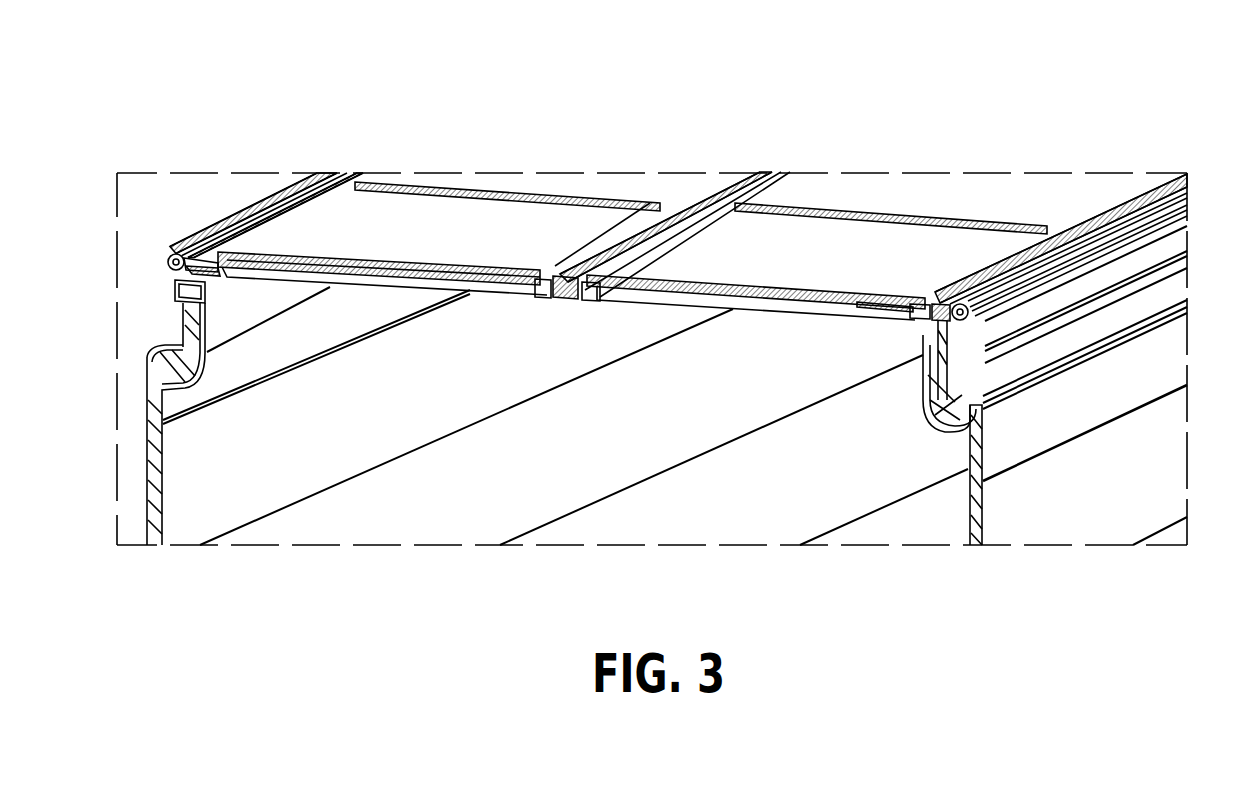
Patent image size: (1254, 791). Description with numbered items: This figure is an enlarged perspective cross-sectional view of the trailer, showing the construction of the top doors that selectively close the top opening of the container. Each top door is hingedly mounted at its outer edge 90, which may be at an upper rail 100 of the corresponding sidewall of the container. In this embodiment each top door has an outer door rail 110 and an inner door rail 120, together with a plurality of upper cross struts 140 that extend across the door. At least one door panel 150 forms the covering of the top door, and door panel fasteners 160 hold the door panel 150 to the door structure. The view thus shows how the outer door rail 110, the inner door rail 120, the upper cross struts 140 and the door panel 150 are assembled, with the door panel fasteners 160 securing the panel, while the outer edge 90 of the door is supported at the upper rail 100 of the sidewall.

The outer edge 90 is at (290, 175).
The upper rail 100 is at (210, 357).
The outer door rail 110 is at (930, 323).
The inner door rail 120 is at (226, 282).
The upper cross struts 140 is at (557, 200).
The door panel 150 is at (490, 210).
The door panel fasteners 160 is at (378, 185).